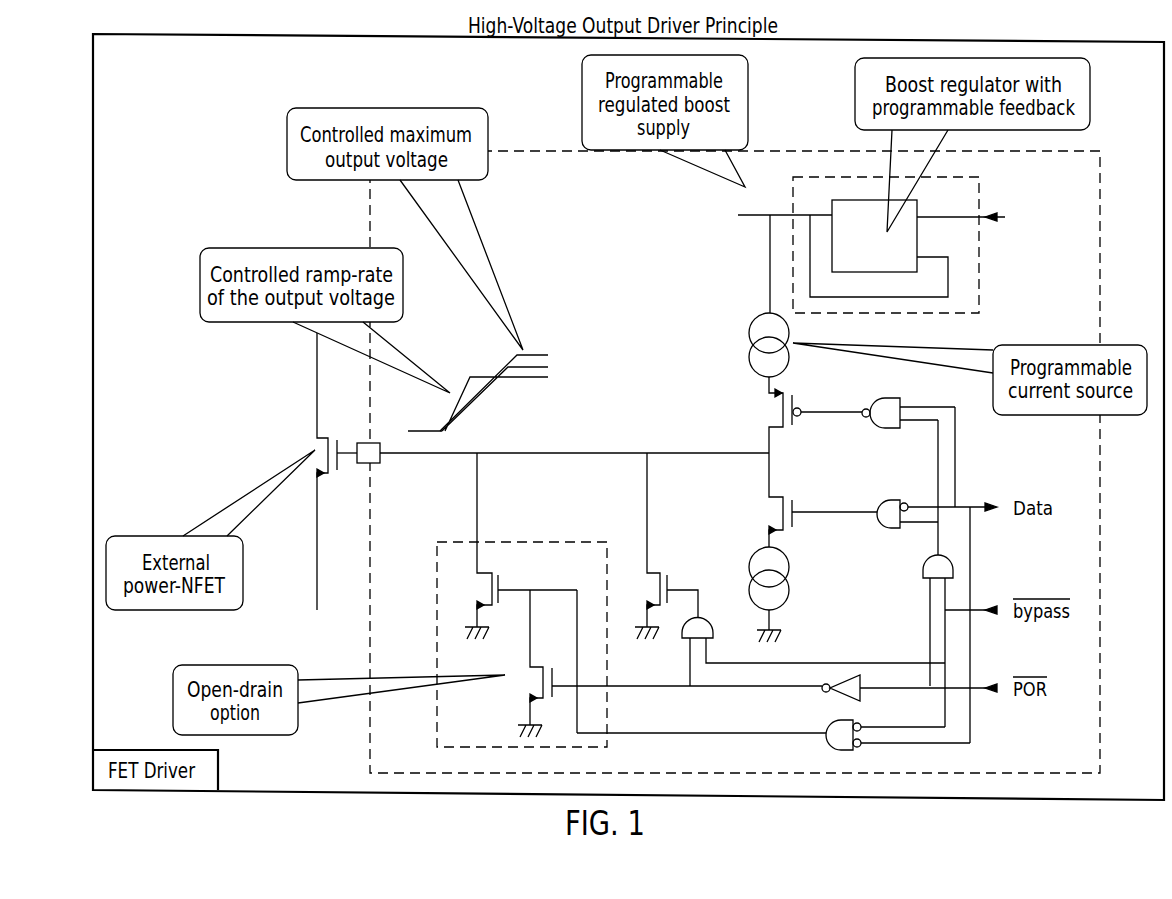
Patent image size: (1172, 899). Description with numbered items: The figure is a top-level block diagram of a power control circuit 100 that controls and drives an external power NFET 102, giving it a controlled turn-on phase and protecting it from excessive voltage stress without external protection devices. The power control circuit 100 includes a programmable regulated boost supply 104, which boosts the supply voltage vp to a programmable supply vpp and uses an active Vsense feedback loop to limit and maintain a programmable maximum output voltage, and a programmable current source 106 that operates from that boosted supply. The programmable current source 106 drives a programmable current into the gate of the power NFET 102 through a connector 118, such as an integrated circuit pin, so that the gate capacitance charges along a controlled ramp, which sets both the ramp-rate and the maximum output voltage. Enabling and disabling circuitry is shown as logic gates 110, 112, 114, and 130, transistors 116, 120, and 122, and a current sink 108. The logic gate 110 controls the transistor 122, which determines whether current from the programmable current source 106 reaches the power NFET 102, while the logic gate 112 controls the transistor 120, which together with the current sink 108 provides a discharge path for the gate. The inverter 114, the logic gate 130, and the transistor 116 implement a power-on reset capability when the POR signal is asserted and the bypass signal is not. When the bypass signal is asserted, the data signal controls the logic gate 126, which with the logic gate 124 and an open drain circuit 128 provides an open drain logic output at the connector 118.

The power control circuit 100 is at (369, 740).
The external power NFET 102 is at (316, 438).
The programmable regulated boost supply 104 is at (793, 276).
The programmable current source 106 is at (750, 336).
The current sink 108 is at (790, 577).
The logic gate 110 is at (880, 428).
The logic gate 112 is at (886, 500).
The inverter 114 is at (828, 698).
The transistor 116 is at (660, 572).
The connector 118 is at (371, 464).
The transistor 120 is at (767, 507).
The transistor 122 is at (768, 407).
The logic gate 124 is at (925, 557).
The logic gate 126 is at (828, 745).
The open drain circuit 128 is at (606, 744).
The logic gate 130 is at (704, 617).